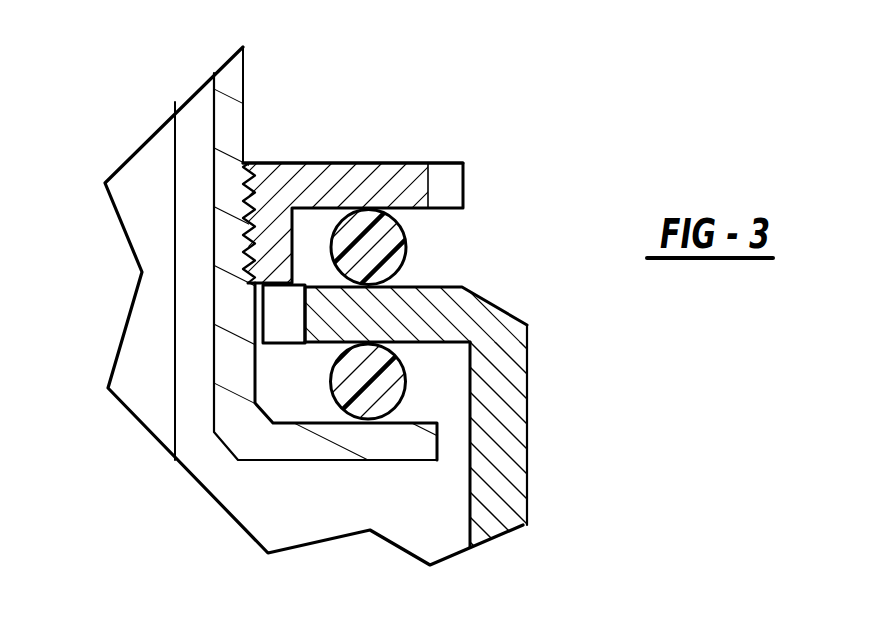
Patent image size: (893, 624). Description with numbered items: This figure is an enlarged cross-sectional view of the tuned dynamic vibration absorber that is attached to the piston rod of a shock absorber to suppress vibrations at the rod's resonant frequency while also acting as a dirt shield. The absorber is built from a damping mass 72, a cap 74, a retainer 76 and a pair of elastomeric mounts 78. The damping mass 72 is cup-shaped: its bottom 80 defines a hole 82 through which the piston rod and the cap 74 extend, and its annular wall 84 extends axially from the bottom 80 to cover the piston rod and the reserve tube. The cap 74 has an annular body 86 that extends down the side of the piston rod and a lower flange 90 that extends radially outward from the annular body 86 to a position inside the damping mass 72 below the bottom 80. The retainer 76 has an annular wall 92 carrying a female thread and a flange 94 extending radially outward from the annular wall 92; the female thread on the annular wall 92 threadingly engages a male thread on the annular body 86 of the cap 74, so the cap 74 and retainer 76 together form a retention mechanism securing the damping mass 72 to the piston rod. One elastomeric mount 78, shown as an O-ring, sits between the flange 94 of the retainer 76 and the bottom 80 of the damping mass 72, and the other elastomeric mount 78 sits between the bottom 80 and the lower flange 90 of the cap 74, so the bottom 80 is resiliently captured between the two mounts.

The damping mass 72 is at (560, 412).
The cap 74 is at (262, 115).
The retainer 76 is at (449, 139).
The elastomeric mounts 78 is at (380, 240).
The bottom 80 is at (430, 292).
The hole 82 is at (270, 303).
The annular wall 84 is at (503, 497).
The annular body 86 is at (226, 90).
The lower flange 90 is at (317, 442).
The annular wall 92 is at (268, 229).
The flange 94 is at (366, 170).